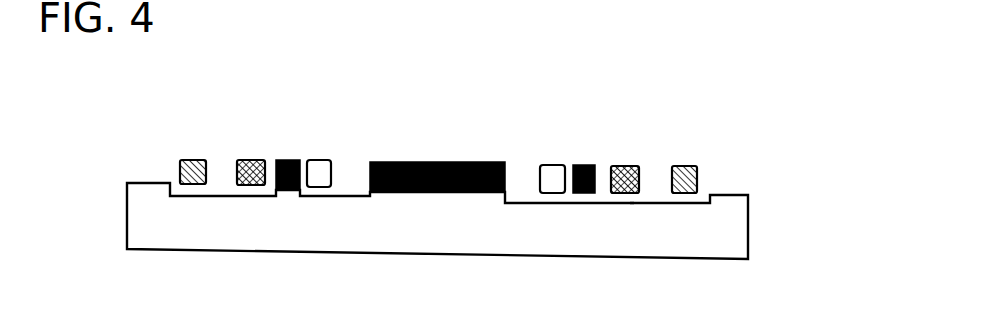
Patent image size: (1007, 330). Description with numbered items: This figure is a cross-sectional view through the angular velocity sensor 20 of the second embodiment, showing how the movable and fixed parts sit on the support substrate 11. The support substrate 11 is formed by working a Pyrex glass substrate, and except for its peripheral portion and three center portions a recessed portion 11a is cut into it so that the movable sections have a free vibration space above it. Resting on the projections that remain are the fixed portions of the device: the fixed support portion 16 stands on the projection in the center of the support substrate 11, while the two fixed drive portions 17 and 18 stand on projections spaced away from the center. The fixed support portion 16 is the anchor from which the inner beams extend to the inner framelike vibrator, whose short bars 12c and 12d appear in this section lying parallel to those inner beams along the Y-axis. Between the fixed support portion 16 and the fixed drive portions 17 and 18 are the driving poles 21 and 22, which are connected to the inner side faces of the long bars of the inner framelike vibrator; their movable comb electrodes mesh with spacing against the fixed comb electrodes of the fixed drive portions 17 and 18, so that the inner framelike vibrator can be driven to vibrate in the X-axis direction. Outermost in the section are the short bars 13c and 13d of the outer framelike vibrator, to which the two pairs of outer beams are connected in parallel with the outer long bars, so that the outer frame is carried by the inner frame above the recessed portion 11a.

The support substrate 11 is at (751, 232).
The recessed portion 11a is at (630, 203).
The short bar 12c is at (623, 166).
The short bar 12d is at (252, 160).
The short bar 13c is at (698, 168).
The short bar 13d is at (188, 160).
The fixed support portion 16 is at (444, 161).
The fixed drive portion 17 is at (577, 165).
The fixed drive portion 18 is at (290, 160).
The angular velocity sensor 20 is at (727, 123).
The driving pole 21 is at (552, 172).
The driving pole 22 is at (318, 162).